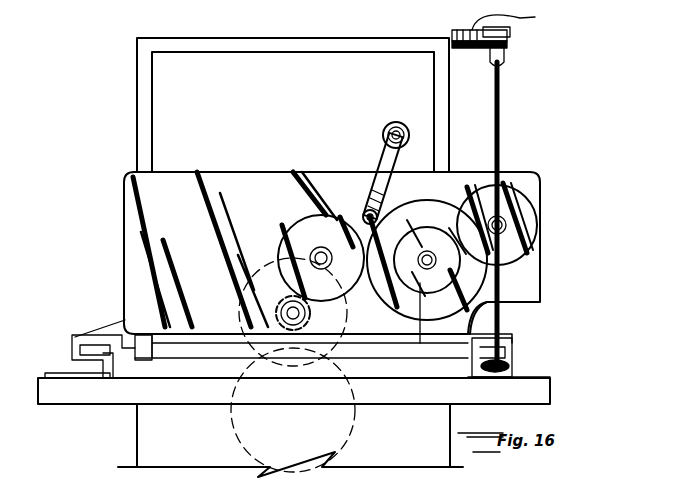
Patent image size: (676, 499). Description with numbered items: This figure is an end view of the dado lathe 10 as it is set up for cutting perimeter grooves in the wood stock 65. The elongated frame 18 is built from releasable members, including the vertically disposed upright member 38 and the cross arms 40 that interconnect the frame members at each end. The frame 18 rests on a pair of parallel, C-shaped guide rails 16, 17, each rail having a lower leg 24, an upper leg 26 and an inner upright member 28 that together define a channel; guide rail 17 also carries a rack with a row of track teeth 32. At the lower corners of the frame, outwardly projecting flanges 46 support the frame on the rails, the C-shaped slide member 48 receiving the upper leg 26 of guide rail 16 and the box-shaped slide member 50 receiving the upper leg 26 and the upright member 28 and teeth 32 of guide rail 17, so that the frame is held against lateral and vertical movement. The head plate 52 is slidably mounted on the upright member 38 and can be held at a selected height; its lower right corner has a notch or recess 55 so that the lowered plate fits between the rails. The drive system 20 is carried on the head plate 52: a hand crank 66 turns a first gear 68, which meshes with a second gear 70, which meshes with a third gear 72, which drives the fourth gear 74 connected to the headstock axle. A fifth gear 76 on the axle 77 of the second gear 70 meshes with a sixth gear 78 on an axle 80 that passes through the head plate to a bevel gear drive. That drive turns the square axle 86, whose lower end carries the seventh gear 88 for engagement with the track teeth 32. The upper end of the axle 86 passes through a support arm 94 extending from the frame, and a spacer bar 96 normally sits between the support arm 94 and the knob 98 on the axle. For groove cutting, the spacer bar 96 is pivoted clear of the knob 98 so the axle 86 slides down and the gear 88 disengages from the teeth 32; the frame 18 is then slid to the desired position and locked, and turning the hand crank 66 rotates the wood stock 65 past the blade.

The dado lathe 10 is at (134, 63).
The frame 18 is at (137, 82).
The upright member 38 is at (140, 104).
The cross arm 40 is at (258, 54).
The spacer bar 96 is at (515, 19).
The knob 98 is at (500, 36).
The support arm 94 is at (505, 55).
The square axle 86 is at (500, 68).
The drive system 20 is at (240, 165).
The head plate 52 is at (272, 185).
The hand crank 66 is at (390, 124).
The second gear 70 is at (375, 178).
The first gear 68 is at (360, 212).
The third gear 72 is at (330, 215).
The axle 80 is at (512, 260).
The sixth gear 78 is at (472, 262).
The axle 77 is at (437, 262).
The notch or recess 55 is at (518, 316).
The flange 46 is at (512, 332).
The slide member 50 is at (512, 342).
The seventh gear 88 is at (510, 366).
The track teeth 32 is at (512, 378).
The upper leg 26 is at (105, 336).
The slide member 48 is at (75, 338).
The lower leg 24 is at (60, 380).
The guide rail 16 is at (113, 380).
The upright member 28 is at (116, 358).
The fourth gear 74 is at (343, 363).
The fifth gear 76 is at (352, 378).
The guide rail 17 is at (455, 382).
The wood stock 65 is at (30, 467).